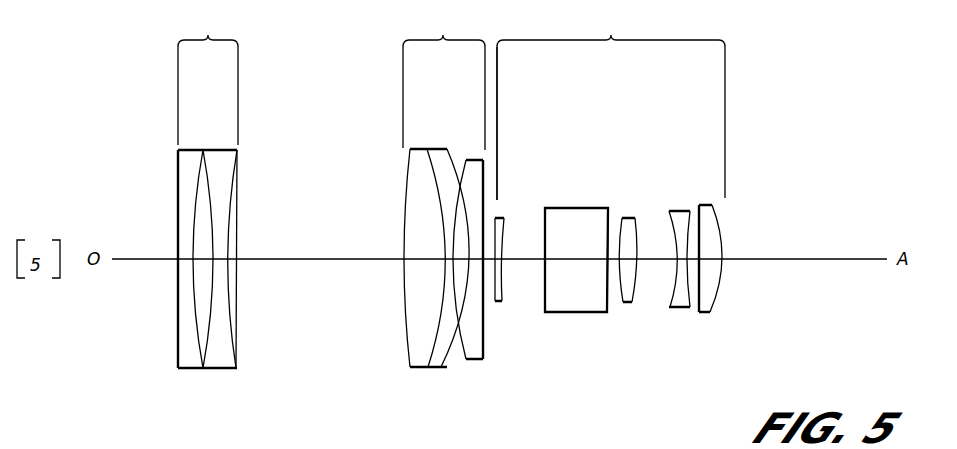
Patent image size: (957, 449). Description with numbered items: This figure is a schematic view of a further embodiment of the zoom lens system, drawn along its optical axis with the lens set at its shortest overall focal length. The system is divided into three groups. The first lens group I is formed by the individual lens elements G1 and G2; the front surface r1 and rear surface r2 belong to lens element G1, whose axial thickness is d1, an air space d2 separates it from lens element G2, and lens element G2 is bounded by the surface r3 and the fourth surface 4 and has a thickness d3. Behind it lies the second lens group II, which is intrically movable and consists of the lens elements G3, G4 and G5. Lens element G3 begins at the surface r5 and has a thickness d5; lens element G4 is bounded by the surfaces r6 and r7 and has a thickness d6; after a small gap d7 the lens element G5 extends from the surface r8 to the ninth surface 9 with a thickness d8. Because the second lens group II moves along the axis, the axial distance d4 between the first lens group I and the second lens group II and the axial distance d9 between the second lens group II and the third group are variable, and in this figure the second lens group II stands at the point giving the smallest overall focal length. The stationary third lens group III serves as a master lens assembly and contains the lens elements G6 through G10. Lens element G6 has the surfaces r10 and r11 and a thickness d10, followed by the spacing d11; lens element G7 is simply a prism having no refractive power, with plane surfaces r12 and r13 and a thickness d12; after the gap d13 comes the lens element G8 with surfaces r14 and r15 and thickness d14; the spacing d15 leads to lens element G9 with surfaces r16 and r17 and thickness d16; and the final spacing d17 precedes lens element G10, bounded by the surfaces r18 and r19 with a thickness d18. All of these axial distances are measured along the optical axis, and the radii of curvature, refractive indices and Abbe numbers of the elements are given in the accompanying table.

The first lens group I is at (208, 76).
The second lens group II is at (444, 78).
The third lens group III is at (611, 103).
The lens element G1 is at (188, 343).
The lens element G2 is at (218, 346).
The lens element G3 is at (418, 351).
The lens element G4 is at (437, 358).
The lens element G5 is at (470, 362).
The lens element G6 is at (510, 304).
The prism G7 is at (563, 303).
The lens element G8 is at (622, 285).
The lens element G9 is at (689, 211).
The lens element G10 is at (702, 205).
The first lens surface r1 is at (178, 165).
The second lens surface r2 is at (198, 190).
The third lens surface r3 is at (210, 163).
The fourth lens surface 4 is at (240, 189).
The fifth lens surface r5 is at (408, 178).
The sixth lens surface r6 is at (430, 165).
The seventh lens surface r7 is at (450, 149).
The eighth lens surface r8 is at (468, 160).
The ninth lens surface 9 is at (497, 160).
The tenth lens surface r10 is at (503, 292).
The eleventh lens surface r11 is at (505, 266).
The twelfth lens surface r12 is at (547, 208).
The thirteenth lens surface r13 is at (606, 312).
The fourteenth lens surface r14 is at (623, 302).
The fifteenth lens surface r15 is at (633, 303).
The sixteenth lens surface r16 is at (668, 307).
The seventeenth lens surface r17 is at (691, 309).
The eighteenth lens surface r18 is at (711, 299).
The nineteenth lens surface r19 is at (723, 244).
The axial thickness of lens element G1 d1 is at (184, 263).
The axial air space between G1 and G2 d2 is at (201, 258).
The axial thickness of lens element G2 d3 is at (221, 263).
The variable axial distance between first and second lens groups d4 is at (300, 260).
The axial thickness of lens element G3 d5 is at (421, 258).
The axial thickness of lens element G4 d6 is at (447, 263).
The axial air space between G4 and G5 d7 is at (473, 341).
The axial thickness of lens element G5 d8 is at (446, 214).
The variable axial distance between second and third lens groups d9 is at (491, 250).
The axial thickness of lens element G6 d10 is at (502, 250).
The axial air space between G6 and G7 d11 is at (516, 258).
The axial thickness of prism G7 d12 is at (565, 256).
The axial air space between G7 and G8 d13 is at (614, 245).
The axial thickness of lens element G8 d14 is at (627, 250).
The axial air space between G8 and G9 d15 is at (647, 253).
The axial thickness of lens element G9 d16 is at (679, 222).
The axial air space between G9 and G10 d17 is at (703, 257).
The axial thickness of lens element G10 d18 is at (724, 283).